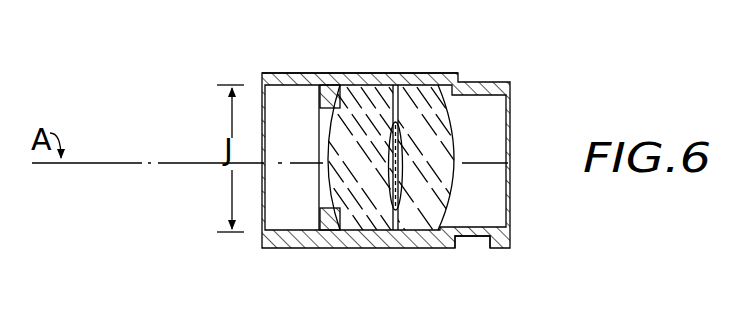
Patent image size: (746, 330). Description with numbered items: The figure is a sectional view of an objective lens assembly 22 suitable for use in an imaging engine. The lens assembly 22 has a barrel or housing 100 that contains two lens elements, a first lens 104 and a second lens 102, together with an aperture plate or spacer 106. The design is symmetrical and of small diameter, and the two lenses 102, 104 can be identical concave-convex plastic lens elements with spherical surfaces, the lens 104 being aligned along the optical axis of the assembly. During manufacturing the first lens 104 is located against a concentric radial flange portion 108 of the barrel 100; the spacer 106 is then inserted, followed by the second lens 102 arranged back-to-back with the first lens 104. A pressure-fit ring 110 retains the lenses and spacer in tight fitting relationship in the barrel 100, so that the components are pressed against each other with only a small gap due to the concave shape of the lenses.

The objective lens assembly 22 is at (338, 71).
The barrel 100 is at (340, 249).
The second lens 102 is at (357, 162).
The first lens 104 is at (443, 185).
The spacer 106 is at (397, 248).
The concentric radial flange portion 108 is at (447, 248).
The pressure-fit ring 110 is at (344, 73).